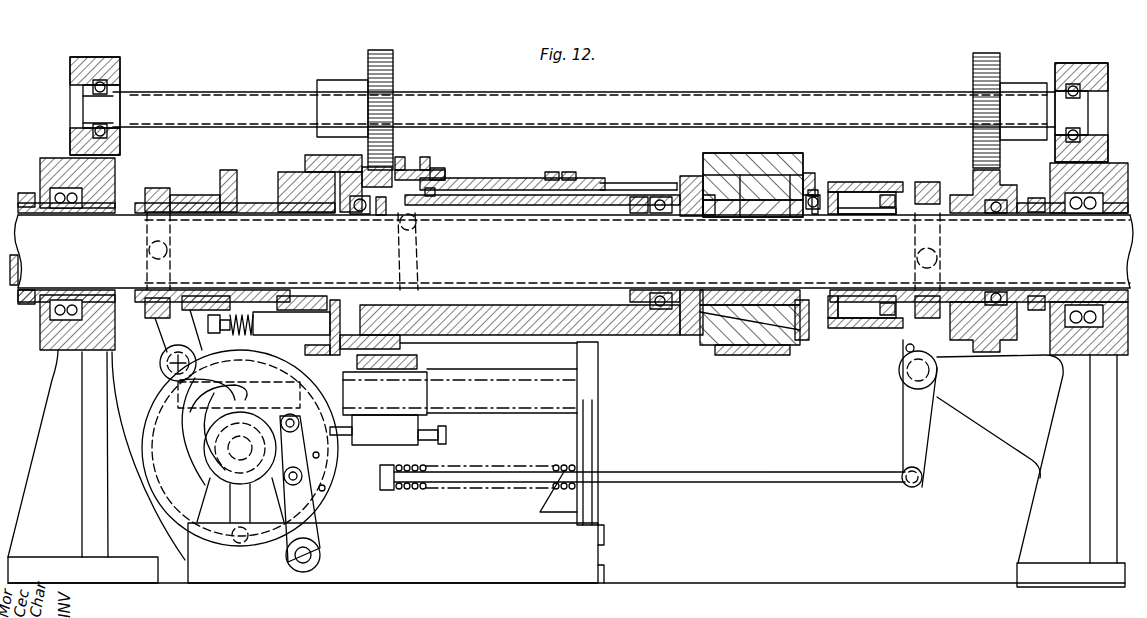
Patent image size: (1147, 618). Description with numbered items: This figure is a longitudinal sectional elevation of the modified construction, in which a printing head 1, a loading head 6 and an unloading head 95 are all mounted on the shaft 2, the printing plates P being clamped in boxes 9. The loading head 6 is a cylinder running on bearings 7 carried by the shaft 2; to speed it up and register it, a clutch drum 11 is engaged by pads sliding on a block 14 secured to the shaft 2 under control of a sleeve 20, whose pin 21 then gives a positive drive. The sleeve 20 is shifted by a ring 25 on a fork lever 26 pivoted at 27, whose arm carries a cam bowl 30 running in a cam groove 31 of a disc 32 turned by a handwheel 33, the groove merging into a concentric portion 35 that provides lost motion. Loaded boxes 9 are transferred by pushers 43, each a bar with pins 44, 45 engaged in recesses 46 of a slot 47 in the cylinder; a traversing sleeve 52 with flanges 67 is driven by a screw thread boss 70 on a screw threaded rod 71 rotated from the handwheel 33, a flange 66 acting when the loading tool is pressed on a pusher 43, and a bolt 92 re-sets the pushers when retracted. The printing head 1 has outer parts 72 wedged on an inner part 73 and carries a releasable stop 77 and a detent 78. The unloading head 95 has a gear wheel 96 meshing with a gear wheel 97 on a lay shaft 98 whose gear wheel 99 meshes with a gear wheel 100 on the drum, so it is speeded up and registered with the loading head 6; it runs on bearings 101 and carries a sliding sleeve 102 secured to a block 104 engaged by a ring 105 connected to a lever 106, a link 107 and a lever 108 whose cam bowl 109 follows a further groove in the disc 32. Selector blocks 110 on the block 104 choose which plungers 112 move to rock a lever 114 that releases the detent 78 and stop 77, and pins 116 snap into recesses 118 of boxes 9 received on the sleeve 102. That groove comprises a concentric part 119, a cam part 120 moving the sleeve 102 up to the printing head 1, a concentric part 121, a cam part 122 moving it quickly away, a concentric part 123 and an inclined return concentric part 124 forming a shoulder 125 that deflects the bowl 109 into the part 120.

The printing head 1 is at (690, 157).
The shaft 2 is at (571, 251).
The loading head 6 is at (530, 206).
The bearings 7 is at (360, 214).
The boxes 9 is at (806, 173).
The clutch drum 11 is at (308, 157).
The block 14 is at (280, 192).
The sleeve 20 is at (212, 197).
The pin 21 is at (274, 327).
The ring 25 is at (168, 190).
The fork or stirrup lever 26 is at (163, 336).
The pivot 27 is at (160, 366).
The cam bowl 30 is at (215, 468).
The cam groove 31 is at (203, 437).
The disc 32 is at (172, 384).
The handwheel 33 is at (248, 545).
The concentric portion 35 is at (304, 350).
The pushers 43 is at (490, 178).
The pin 44 is at (432, 197).
The pin 45 is at (550, 172).
The recesses 46 is at (640, 183).
The slot 47 is at (628, 214).
The traversing sleeve 52 is at (442, 170).
The flange 66 is at (578, 172).
The flanges 67 is at (415, 168).
The screw thread boss 70 is at (385, 393).
The screw threaded rod 71 is at (480, 395).
The outer parts 72 is at (720, 218).
The inner part 73 is at (745, 218).
The releasable stop 77 is at (802, 343).
The detent 78 is at (780, 218).
The bolt 92 is at (381, 216).
The unloading head 95 is at (855, 216).
The gear wheel 96 is at (974, 180).
The gear wheel 97 is at (973, 80).
The lay shaft 98 is at (584, 109).
The gear wheel 99 is at (392, 84).
The gear wheel 100 is at (364, 140).
The bearings 101 is at (815, 212).
The sleeve 102 is at (882, 190).
The block 104 is at (880, 216).
The ring 105 is at (930, 180).
The lever 106 is at (902, 402).
The link 107 is at (745, 483).
The lever 108 is at (320, 533).
The cam bowl 109 is at (289, 414).
The selector blocks 110 is at (896, 195).
The plungers 112 is at (856, 182).
The lever 114 is at (818, 186).
The pins 116 is at (904, 346).
The recesses 118 is at (765, 357).
The concentric part 119 is at (355, 432).
The cam part 120 is at (320, 456).
The concentric part 121 is at (212, 540).
The cam part 122 is at (180, 408).
The concentric part 123 is at (240, 395).
The return concentric part 124 is at (200, 490).
The shoulder 125 is at (328, 490).
The printing plate P is at (760, 156).